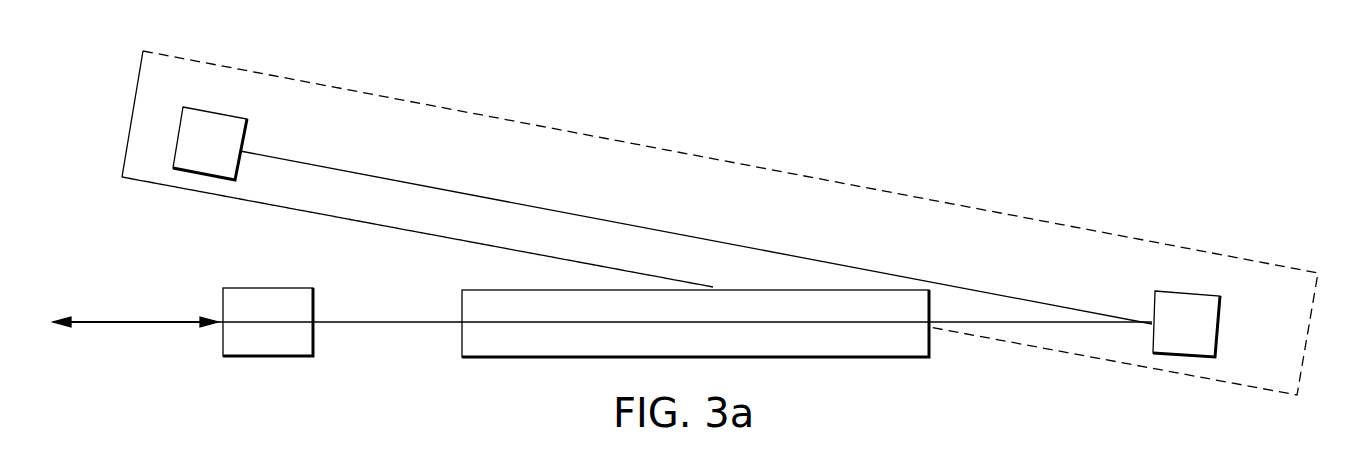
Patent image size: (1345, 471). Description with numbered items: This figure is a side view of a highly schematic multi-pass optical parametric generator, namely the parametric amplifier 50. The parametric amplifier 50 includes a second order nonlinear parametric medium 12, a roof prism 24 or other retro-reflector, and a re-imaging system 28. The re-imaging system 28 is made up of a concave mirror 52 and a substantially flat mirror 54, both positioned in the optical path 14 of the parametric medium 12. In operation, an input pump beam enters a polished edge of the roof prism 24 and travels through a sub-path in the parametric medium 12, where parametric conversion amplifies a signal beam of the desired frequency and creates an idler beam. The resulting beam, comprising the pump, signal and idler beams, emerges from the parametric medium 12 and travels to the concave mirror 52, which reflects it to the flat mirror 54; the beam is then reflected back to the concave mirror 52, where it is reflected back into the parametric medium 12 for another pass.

The parametric amplifier 50 is at (776, 62).
The re-imaging system 28 is at (793, 175).
The substantially flat mirror 54 is at (231, 117).
The concave mirror 52 is at (1219, 333).
The roof prism 24 is at (267, 357).
The second order nonlinear parametric medium 12 is at (885, 358).
The optical path 14 is at (522, 323).